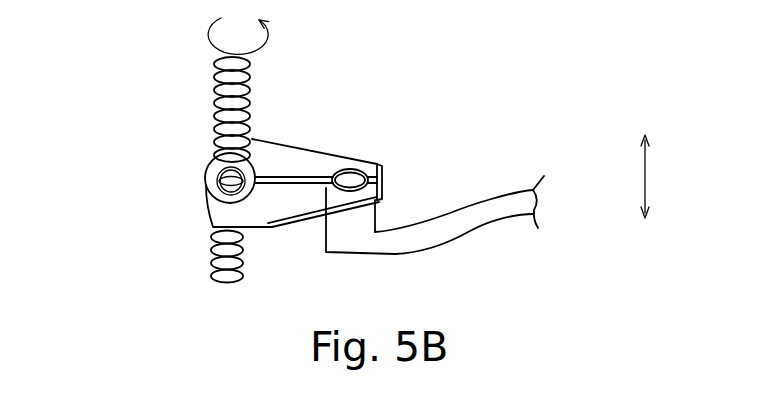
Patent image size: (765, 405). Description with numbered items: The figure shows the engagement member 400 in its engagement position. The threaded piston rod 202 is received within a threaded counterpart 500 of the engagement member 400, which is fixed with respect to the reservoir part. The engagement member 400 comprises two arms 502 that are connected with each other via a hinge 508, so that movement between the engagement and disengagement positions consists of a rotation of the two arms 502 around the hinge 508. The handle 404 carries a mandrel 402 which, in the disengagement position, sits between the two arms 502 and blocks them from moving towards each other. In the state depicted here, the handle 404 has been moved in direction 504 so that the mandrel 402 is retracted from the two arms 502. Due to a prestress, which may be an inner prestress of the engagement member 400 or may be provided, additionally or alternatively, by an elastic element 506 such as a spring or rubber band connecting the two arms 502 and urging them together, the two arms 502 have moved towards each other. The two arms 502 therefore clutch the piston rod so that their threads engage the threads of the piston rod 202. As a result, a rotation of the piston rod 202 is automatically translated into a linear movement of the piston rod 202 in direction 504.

The threaded piston rod 202 is at (217, 112).
The threaded counterpart 500 is at (253, 140).
The arms 502 is at (310, 165).
The engagement member 400 is at (208, 177).
The hinge 508 is at (207, 192).
The elastic element 506 is at (300, 197).
The mandrel 402 is at (377, 217).
The handle 404 is at (513, 211).
The direction 504 is at (645, 172).